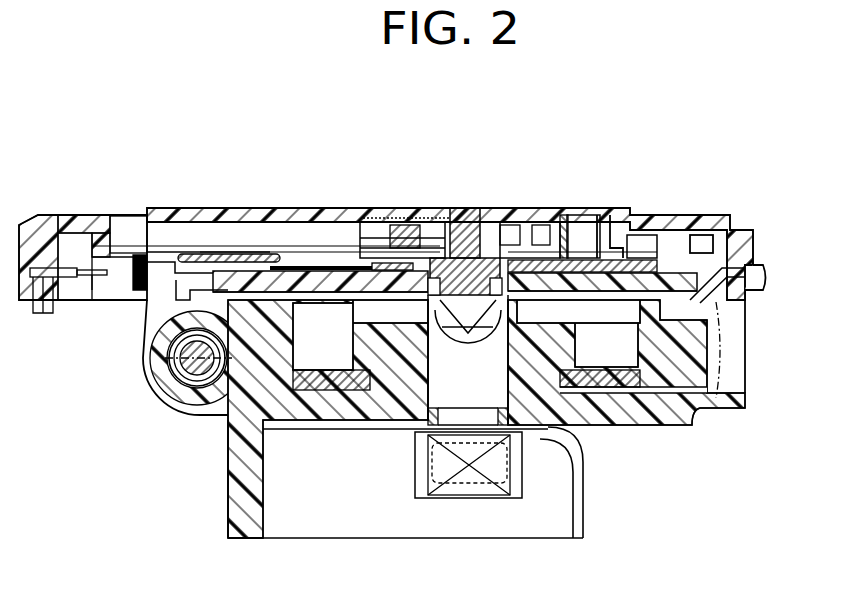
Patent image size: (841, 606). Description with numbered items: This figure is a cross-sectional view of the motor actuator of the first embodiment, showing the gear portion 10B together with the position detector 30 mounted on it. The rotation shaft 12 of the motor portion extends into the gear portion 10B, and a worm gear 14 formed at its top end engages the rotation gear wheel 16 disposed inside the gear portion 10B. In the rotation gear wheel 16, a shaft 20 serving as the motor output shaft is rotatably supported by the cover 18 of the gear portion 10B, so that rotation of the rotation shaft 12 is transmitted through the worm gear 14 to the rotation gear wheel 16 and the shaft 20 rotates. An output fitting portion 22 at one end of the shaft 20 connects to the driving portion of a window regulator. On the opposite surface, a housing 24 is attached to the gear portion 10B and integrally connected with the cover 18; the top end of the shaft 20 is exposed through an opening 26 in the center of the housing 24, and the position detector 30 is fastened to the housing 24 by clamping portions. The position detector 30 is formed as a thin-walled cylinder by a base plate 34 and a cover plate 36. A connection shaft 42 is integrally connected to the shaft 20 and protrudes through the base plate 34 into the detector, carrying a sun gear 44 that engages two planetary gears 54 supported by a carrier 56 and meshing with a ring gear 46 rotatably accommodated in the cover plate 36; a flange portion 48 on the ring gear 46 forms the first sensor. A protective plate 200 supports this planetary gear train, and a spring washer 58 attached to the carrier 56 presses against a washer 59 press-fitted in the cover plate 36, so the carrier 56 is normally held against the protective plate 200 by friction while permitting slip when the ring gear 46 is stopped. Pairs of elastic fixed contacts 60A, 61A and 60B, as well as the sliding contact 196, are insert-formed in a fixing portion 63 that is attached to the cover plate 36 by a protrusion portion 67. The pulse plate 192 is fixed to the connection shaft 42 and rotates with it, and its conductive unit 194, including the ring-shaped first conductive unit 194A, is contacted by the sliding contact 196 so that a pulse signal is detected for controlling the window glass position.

The gear portion 10B is at (210, 422).
The rotation shaft 12 is at (190, 357).
The worm gear 14 is at (158, 383).
The rotation gear wheel 16 is at (713, 352).
The cover 18 is at (638, 428).
The shaft 20 is at (495, 378).
The output fitting portion 22 is at (488, 500).
The housing 24 is at (737, 292).
The opening 26 is at (490, 320).
The position detector 30 is at (517, 138).
The base plate 34 is at (157, 297).
The cover plate 36 is at (223, 208).
The connection shaft 42 is at (455, 215).
The sun gear 44 is at (500, 225).
The ring gear 46 is at (560, 230).
The flange portion 48 is at (355, 245).
The planetary gears 54 is at (372, 240).
The carrier 56 is at (400, 230).
The spring washer 58 is at (530, 235).
The washer 59 is at (510, 225).
The fixed contact 60A is at (266, 179).
The fixed contact 60B is at (392, 266).
The fixed contact 61A is at (298, 252).
The fixing portion 63 is at (175, 208).
The protrusion portion 67 is at (195, 292).
The pulse plate 192 is at (595, 240).
The conductive unit 194 is at (335, 252).
The first conductive unit 194A is at (320, 235).
The sliding contact 196 is at (258, 208).
The protective plate 200 is at (615, 240).